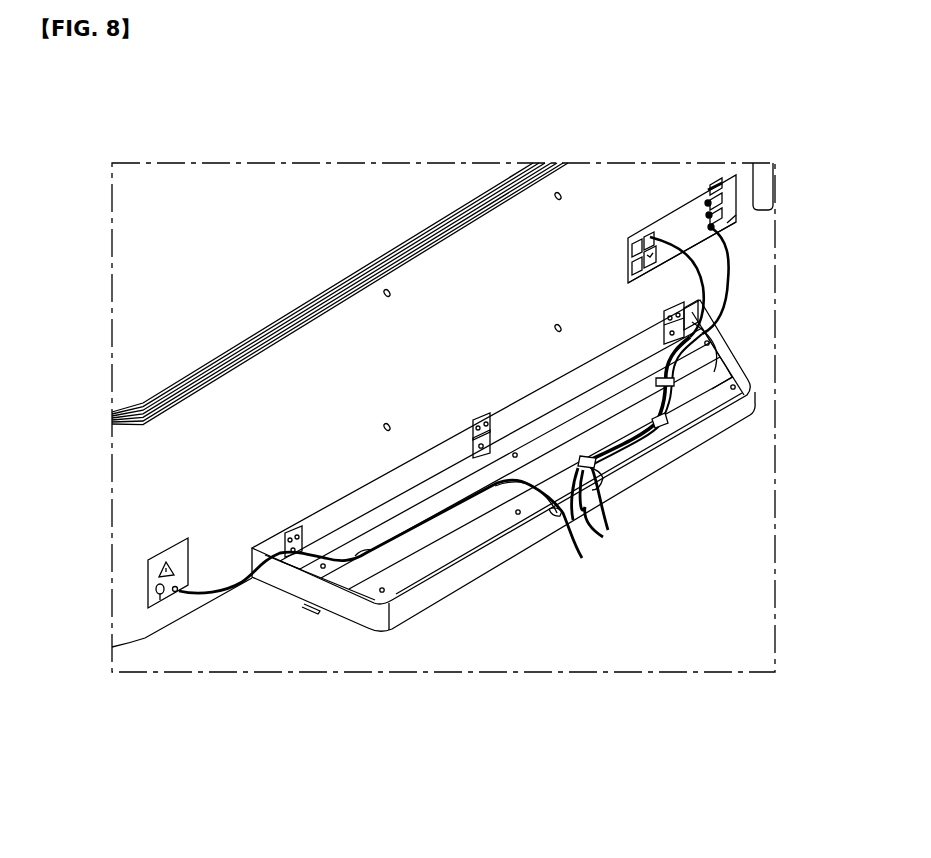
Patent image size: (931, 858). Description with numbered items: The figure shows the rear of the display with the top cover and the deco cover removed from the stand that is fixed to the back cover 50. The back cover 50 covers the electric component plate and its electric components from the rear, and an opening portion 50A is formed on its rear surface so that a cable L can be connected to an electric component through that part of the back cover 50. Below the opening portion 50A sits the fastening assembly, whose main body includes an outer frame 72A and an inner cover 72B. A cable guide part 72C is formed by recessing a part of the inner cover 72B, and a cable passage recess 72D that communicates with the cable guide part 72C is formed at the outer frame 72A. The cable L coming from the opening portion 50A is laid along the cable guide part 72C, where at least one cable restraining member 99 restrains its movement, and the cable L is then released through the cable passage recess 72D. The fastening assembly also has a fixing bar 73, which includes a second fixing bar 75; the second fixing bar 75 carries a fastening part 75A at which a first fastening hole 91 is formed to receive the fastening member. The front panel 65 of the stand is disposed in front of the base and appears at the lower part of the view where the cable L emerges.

The back cover 50 is at (543, 212).
The opening portion 50A is at (697, 243).
The cable L is at (703, 281).
The outer frame 72A is at (748, 403).
The inner cover 72B is at (418, 564).
The cable guide part 72C is at (694, 393).
The cable passage recess 72D is at (553, 516).
The fixing bar 73 is at (366, 497).
The second fixing bar 75 is at (484, 429).
The fastening part 75A is at (488, 456).
The first fastening hole 91 is at (488, 417).
The front panel 65 is at (364, 552).
The cable restraining member 99 is at (600, 473).